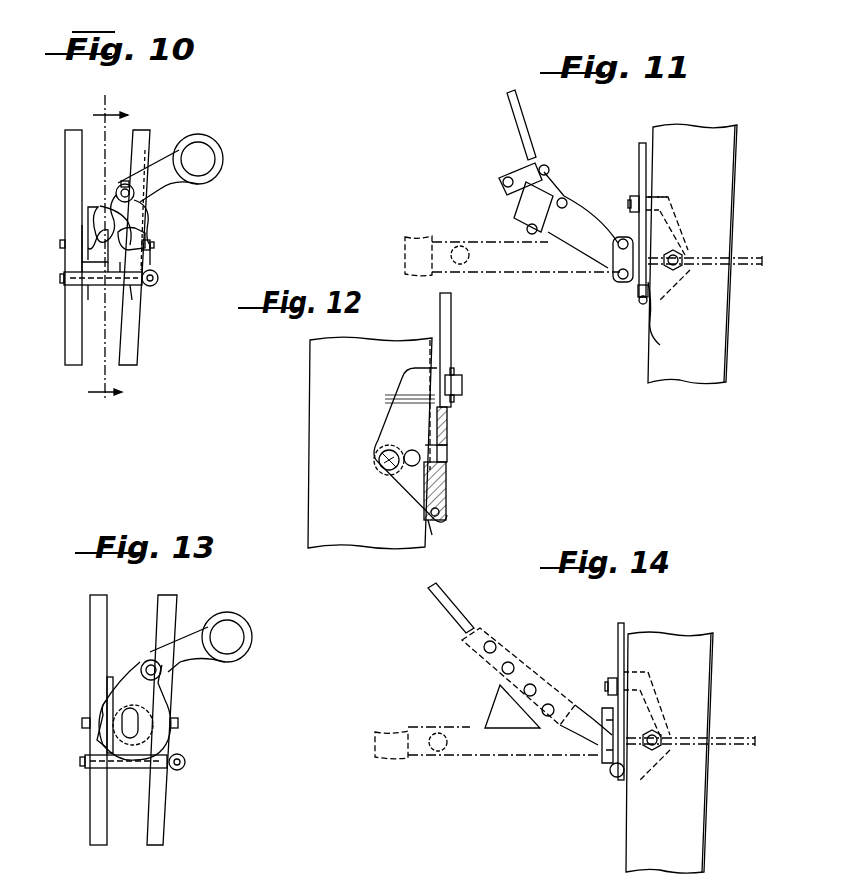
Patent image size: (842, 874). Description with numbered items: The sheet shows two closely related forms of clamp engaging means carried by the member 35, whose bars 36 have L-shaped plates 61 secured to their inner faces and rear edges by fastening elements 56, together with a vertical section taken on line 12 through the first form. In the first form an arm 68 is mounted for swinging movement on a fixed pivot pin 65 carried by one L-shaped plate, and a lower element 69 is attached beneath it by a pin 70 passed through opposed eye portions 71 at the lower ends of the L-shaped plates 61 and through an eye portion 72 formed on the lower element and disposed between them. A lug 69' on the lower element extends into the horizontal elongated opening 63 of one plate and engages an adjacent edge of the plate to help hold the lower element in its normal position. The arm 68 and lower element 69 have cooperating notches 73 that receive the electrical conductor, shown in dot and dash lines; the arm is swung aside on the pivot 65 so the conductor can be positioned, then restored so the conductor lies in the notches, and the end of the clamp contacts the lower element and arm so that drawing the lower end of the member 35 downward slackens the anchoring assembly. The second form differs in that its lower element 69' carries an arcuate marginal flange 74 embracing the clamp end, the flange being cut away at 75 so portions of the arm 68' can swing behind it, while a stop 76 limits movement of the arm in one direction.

In FIG. 10, the section line 12 is at (108, 258).
In FIG. 11, the member 35 is at (738, 158).
In FIG. 14, the member 35 is at (715, 661).
In FIG. 11, the bars 36 is at (729, 182).
In FIG. 14, the bars 36 is at (707, 695).
In FIG. 11, the fastening elements 56 is at (680, 250).
In FIG. 12, the fastening elements 56 is at (385, 466).
In FIG. 14, the fastening elements 56 is at (658, 730).
In FIG. 10, the L-shaped plates 61 is at (135, 213).
In FIG. 11, the L-shaped plates 61 is at (669, 279).
In FIG. 12, the L-shaped plates 61 is at (420, 505).
In FIG. 12, the elongated opening 63 is at (404, 455).
In FIG. 10, the fixed pivot pin 65 is at (136, 194).
In FIG. 11, the fixed pivot pin 65 is at (630, 204).
In FIG. 12, the fixed pivot pin 65 is at (462, 388).
In FIG. 10, the arm 68 is at (176, 169).
In FIG. 11, the arm 68 is at (622, 220).
In FIG. 12, the arm 68 is at (464, 369).
In FIG. 13, the arm 68' is at (157, 711).
In FIG. 14, the arm 68' is at (596, 701).
In FIG. 10, the lower element 69 is at (61, 246).
In FIG. 11, the lower element 69 is at (614, 267).
In FIG. 12, the lower element 69 is at (453, 491).
In FIG. 12, the lug / lower element 69' is at (397, 503).
In FIG. 13, the lug / lower element 69' is at (76, 728).
In FIG. 14, the lug / lower element 69' is at (658, 726).
In FIG. 10, the pin 70 is at (159, 284).
In FIG. 11, the pin 70 is at (641, 300).
In FIG. 12, the pin 70 is at (432, 535).
In FIG. 10, the eye portions 71 is at (75, 282).
In FIG. 11, the eye portions 71 is at (636, 290).
In FIG. 10, the eye portion 72 is at (92, 288).
In FIG. 12, the eye portion 72 is at (440, 514).
In FIG. 10, the cooperating notches 73 is at (140, 247).
In FIG. 12, the cooperating notches 73 is at (447, 470).
In FIG. 13, the arcuate marginal flange 74 is at (165, 743).
In FIG. 14, the arcuate marginal flange 74 is at (612, 766).
In FIG. 14, the cut away 75 is at (604, 720).
In FIG. 13, the stop 76 is at (167, 676).
In FIG. 14, the stop 76 is at (622, 683).